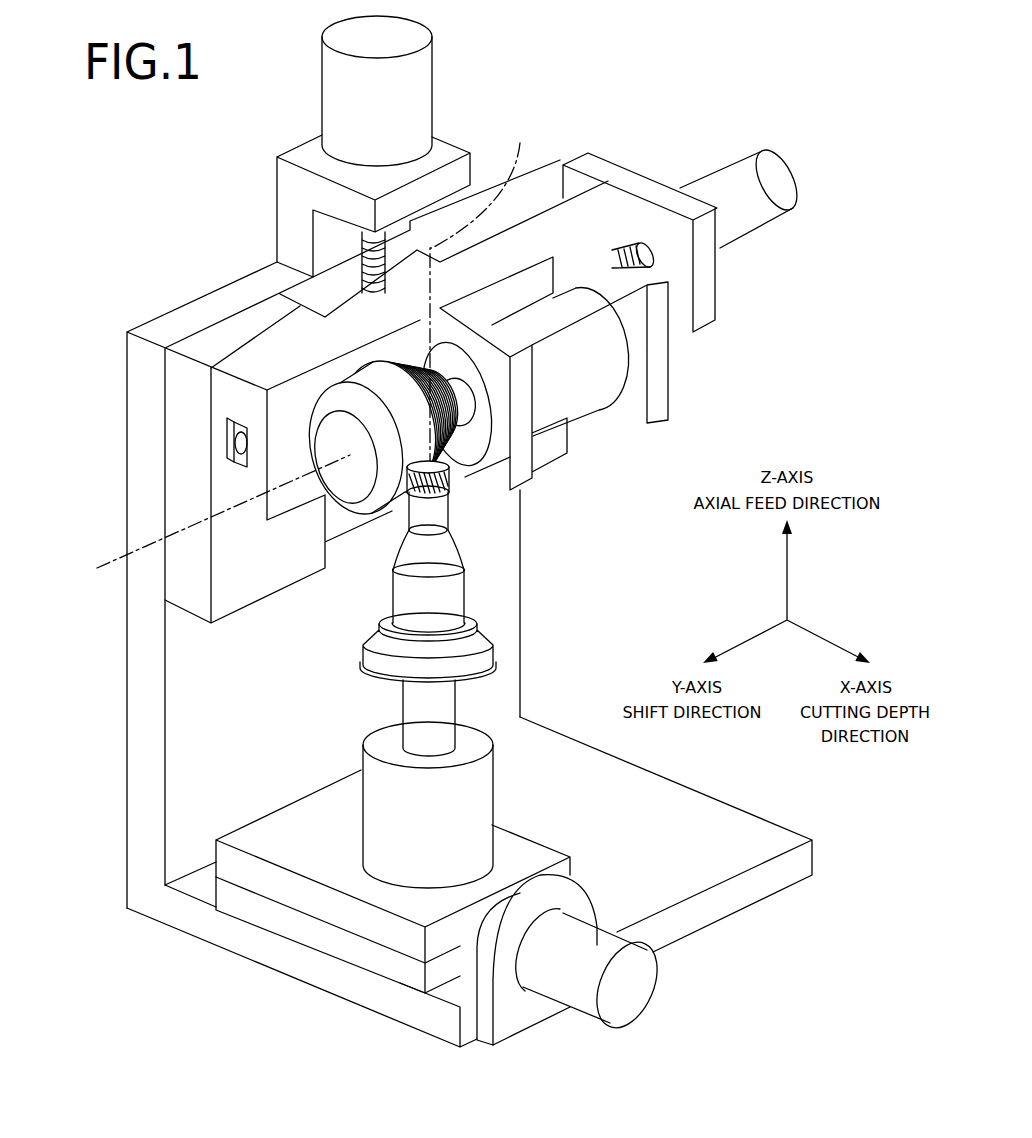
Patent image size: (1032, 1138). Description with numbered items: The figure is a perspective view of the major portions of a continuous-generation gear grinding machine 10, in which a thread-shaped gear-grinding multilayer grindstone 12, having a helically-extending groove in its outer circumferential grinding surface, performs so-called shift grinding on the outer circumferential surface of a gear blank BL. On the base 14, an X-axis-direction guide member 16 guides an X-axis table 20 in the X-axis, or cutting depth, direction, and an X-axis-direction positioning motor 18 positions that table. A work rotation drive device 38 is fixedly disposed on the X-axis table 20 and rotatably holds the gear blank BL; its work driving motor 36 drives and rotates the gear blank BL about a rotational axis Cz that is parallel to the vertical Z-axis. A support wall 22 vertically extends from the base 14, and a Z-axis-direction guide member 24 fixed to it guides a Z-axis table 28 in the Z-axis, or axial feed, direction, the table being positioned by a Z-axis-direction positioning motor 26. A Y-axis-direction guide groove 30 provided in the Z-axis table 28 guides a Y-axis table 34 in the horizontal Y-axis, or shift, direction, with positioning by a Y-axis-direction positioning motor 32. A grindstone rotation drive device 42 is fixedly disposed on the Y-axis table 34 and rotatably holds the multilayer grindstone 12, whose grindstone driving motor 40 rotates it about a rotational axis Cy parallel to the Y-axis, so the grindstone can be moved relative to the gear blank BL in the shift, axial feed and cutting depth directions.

The continuous-generation gear grinding machine 10 is at (103, 213).
The gear-grinding multilayer grindstone 12 is at (367, 510).
The base 14 is at (804, 860).
The X-axis-direction guide member 16 is at (260, 914).
The X-axis-direction positioning motor 18 is at (620, 1005).
The X-axis table 20 is at (323, 900).
The support wall 22 is at (127, 697).
The Z-axis-direction guide member 24 is at (183, 405).
The Z-axis-direction positioning motor 26 is at (333, 94).
The Z-axis table 28 is at (222, 440).
The Y-axis-direction guide groove 30 is at (344, 457).
The Y-axis-direction positioning motor 32 is at (755, 170).
The Y-axis table 34 is at (287, 368).
The work driving motor 36 is at (480, 781).
The work rotation drive device 38 is at (357, 681).
The grindstone driving motor 40 is at (603, 360).
The grindstone rotation drive device 42 is at (600, 436).
The gear blank BL is at (450, 500).
The rotational axis Cz is at (480, 295).
The rotational axis Cy is at (100, 562).